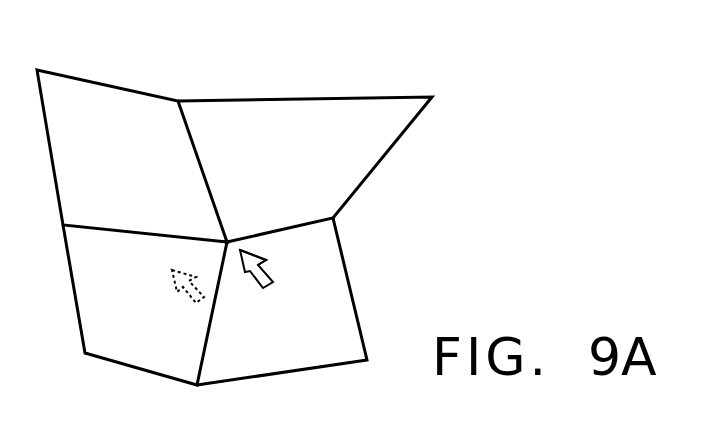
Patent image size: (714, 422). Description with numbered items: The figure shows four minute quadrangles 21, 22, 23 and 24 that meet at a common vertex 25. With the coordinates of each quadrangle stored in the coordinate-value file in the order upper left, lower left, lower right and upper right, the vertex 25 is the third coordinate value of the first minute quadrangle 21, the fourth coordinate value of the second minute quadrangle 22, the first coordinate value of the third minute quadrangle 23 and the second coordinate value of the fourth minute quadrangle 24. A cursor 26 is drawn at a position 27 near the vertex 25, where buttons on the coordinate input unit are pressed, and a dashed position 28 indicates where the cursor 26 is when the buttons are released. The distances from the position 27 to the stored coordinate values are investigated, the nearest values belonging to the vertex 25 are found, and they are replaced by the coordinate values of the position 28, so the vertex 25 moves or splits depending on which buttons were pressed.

The first minute quadrangle 21 is at (105, 105).
The second minute quadrangle 22 is at (127, 354).
The third minute quadrangle 23 is at (325, 292).
The fourth minute quadrangle 24 is at (305, 118).
The common vertex 25 is at (233, 238).
The cursor 26 is at (261, 284).
The position near the vertex 27 is at (245, 249).
The position at which the buttons are released 28 is at (171, 268).